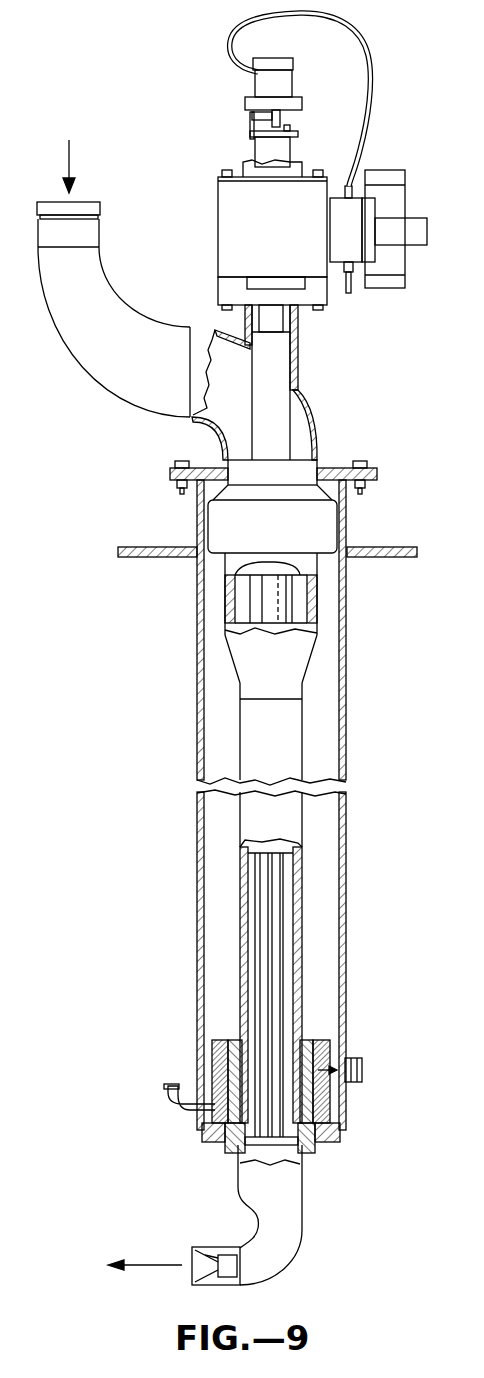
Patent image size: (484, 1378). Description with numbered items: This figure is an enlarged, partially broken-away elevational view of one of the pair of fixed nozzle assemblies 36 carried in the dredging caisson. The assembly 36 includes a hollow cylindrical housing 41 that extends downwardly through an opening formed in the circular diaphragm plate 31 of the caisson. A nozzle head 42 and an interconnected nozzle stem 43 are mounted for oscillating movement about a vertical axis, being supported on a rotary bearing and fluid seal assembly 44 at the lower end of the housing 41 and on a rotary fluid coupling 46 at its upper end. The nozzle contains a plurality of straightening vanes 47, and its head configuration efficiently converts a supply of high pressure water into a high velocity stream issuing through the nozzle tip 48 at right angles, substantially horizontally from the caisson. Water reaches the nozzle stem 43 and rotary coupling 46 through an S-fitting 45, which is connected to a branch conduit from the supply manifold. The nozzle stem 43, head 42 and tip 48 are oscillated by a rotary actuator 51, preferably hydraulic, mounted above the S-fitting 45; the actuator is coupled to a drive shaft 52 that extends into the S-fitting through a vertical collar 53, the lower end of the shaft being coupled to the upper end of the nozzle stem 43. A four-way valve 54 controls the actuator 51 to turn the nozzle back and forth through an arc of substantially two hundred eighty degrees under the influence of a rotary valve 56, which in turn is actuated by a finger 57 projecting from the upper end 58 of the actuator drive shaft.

The circular diaphragm plate 31 is at (392, 548).
The fixed nozzle assembly 36 is at (358, 822).
The hollow cylindrical housing 41 is at (347, 692).
The nozzle head 42 is at (294, 1222).
The nozzle stem 43 is at (302, 968).
The rotary bearing and fluid seal assembly 44 is at (320, 1026).
The S-fitting 45 is at (155, 418).
The rotary fluid coupling 46 is at (322, 530).
The straightening vanes 47 is at (271, 905).
The nozzle tip 48 is at (200, 1247).
The rotary actuator 51 is at (212, 228).
The drive shaft 52 is at (280, 427).
The vertical collar 53 is at (300, 352).
The four-way valve 54 is at (353, 220).
The rotary valve 56 is at (290, 87).
The finger 57 is at (250, 118).
The upper end of actuator drive shaft 58 is at (282, 155).